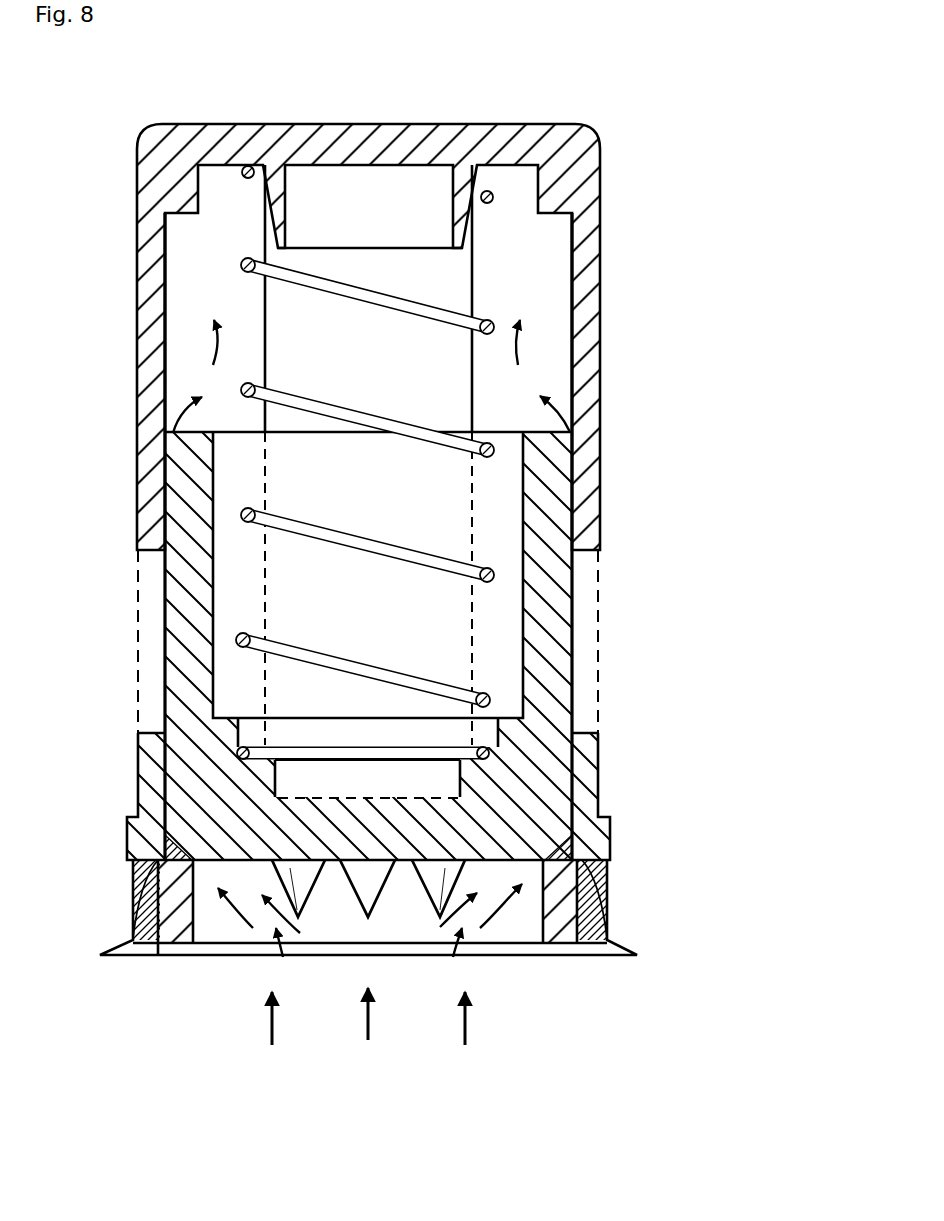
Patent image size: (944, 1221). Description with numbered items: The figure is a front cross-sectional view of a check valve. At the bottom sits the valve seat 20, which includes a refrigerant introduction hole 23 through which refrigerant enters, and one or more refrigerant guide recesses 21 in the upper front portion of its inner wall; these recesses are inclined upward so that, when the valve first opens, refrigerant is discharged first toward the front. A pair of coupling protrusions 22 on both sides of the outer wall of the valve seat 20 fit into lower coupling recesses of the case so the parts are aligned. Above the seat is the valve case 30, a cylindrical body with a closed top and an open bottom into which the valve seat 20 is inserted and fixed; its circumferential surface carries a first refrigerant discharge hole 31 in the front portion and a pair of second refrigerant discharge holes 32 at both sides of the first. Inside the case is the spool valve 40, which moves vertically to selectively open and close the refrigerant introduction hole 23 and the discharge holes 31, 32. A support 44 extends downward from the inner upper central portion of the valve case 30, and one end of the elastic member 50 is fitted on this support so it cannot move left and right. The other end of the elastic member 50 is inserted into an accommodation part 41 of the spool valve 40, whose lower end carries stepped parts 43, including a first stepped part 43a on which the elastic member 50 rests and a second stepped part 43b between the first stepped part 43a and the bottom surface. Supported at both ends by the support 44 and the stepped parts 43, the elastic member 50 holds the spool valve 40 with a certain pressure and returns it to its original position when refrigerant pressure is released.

The valve seat 20 is at (397, 942).
The refrigerant guide recess 21 is at (368, 860).
The coupling protrusion 22 is at (608, 915).
The refrigerant introduction hole 23 is at (195, 915).
The valve case 30 is at (405, 150).
The first refrigerant discharge hole 31 is at (290, 306).
The second refrigerant discharge hole 32 is at (153, 598).
The spool valve 40 is at (361, 536).
The accommodation part 41 is at (245, 491).
The stepped part 43 is at (321, 726).
The first stepped part 43a is at (228, 716).
The second stepped part 43b is at (252, 752).
The support 44 is at (596, 866).
The elastic member 50 is at (455, 310).